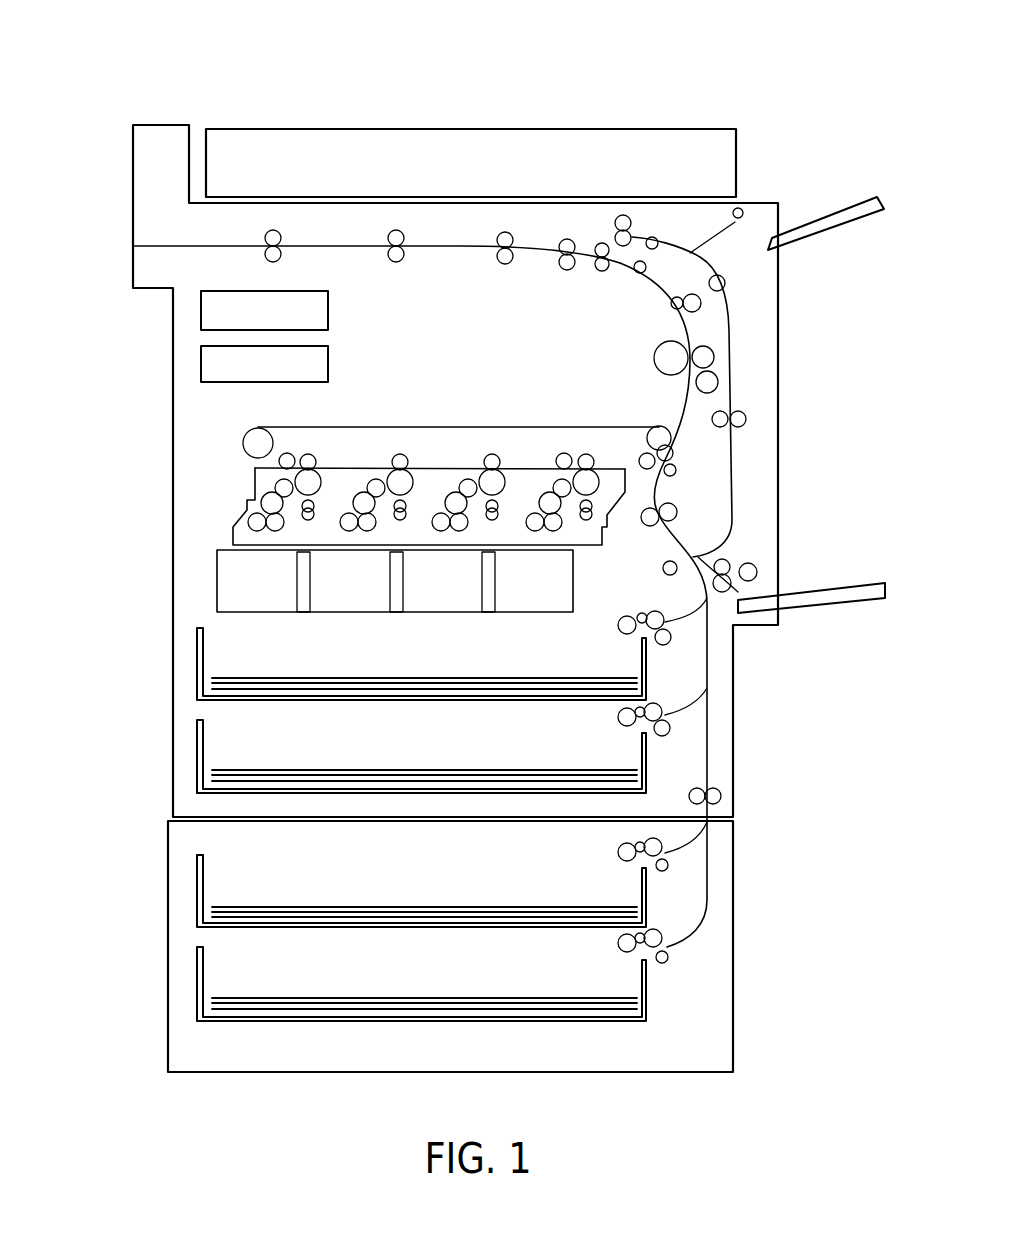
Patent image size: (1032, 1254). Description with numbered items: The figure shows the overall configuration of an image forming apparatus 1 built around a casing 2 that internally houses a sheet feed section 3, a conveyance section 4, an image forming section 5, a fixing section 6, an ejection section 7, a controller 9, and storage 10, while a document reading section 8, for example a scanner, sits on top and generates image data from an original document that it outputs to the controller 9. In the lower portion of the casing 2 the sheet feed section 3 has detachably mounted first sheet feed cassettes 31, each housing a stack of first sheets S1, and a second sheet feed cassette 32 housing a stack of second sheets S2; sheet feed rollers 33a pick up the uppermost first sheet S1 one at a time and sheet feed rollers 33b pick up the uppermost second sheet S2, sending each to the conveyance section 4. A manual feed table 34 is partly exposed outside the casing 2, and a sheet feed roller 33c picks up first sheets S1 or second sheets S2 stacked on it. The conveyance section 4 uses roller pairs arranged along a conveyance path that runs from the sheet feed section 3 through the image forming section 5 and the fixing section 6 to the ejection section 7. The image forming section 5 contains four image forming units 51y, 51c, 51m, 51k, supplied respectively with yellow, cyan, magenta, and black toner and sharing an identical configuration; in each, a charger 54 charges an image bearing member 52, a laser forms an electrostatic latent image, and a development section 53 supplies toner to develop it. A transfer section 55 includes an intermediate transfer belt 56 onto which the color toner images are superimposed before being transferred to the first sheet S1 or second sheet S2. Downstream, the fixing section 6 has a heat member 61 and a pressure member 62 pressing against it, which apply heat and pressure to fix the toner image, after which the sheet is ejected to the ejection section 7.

The image forming apparatus 1 is at (731, 78).
The casing 2 is at (733, 700).
The sheet feed section 3 is at (382, 808).
The conveyance section 4 is at (769, 467).
The image forming section 5 is at (369, 506).
The fixing section 6 is at (713, 336).
The ejection section 7 is at (151, 234).
The document reading section 8 is at (388, 157).
The controller 9 is at (200, 322).
The storage 10 is at (200, 362).
The first sheet feed cassette 31 is at (177, 672).
The second sheet feed cassette 32 is at (177, 993).
The sheet feed rollers 33a is at (625, 623).
The sheet feed rollers 33b is at (622, 948).
The sheet feed roller 33c is at (750, 567).
The manual feed table 34 is at (842, 580).
The image forming unit 51y is at (222, 522).
The image forming unit 51c is at (382, 545).
The image forming unit 51m is at (477, 545).
The image forming unit 51k is at (572, 547).
The image bearing member 52 is at (313, 483).
The development section 53 is at (280, 485).
The charger 54 is at (307, 514).
The transfer section 55 is at (227, 447).
The intermediate transfer belt 56 is at (390, 423).
The heat member 61 is at (662, 358).
The pressure member 62 is at (708, 357).
The first sheet S1 is at (250, 688).
The second sheet S2 is at (250, 1010).